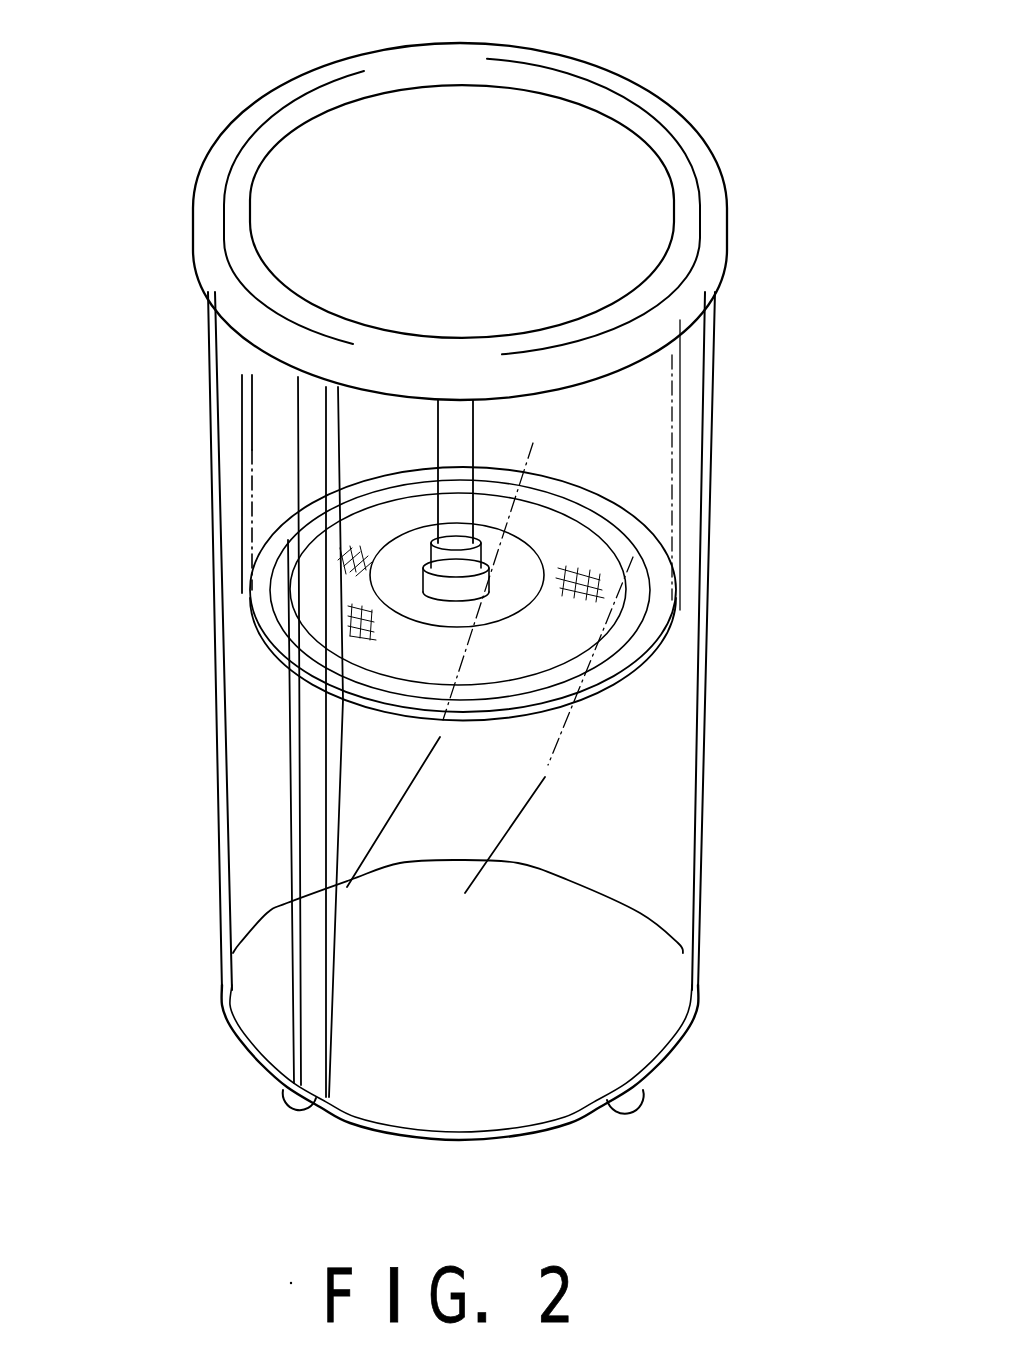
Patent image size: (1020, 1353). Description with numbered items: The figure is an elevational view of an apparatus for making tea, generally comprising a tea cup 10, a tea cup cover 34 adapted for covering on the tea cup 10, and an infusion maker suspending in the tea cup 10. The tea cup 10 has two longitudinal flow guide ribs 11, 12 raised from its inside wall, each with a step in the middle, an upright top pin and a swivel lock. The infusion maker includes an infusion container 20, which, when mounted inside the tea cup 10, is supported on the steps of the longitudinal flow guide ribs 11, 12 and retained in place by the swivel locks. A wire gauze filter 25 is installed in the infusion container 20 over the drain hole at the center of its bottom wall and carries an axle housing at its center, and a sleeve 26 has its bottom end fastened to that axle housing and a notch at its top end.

The tea cup 10 is at (707, 722).
The longitudinal flow guide rib 11 is at (290, 748).
The longitudinal flow guide rib 12 is at (217, 742).
The infusion container 20 is at (250, 413).
The wire gauze filter 25 is at (277, 595).
The sleeve 26 is at (460, 447).
The tea cup cover 34 is at (668, 115).